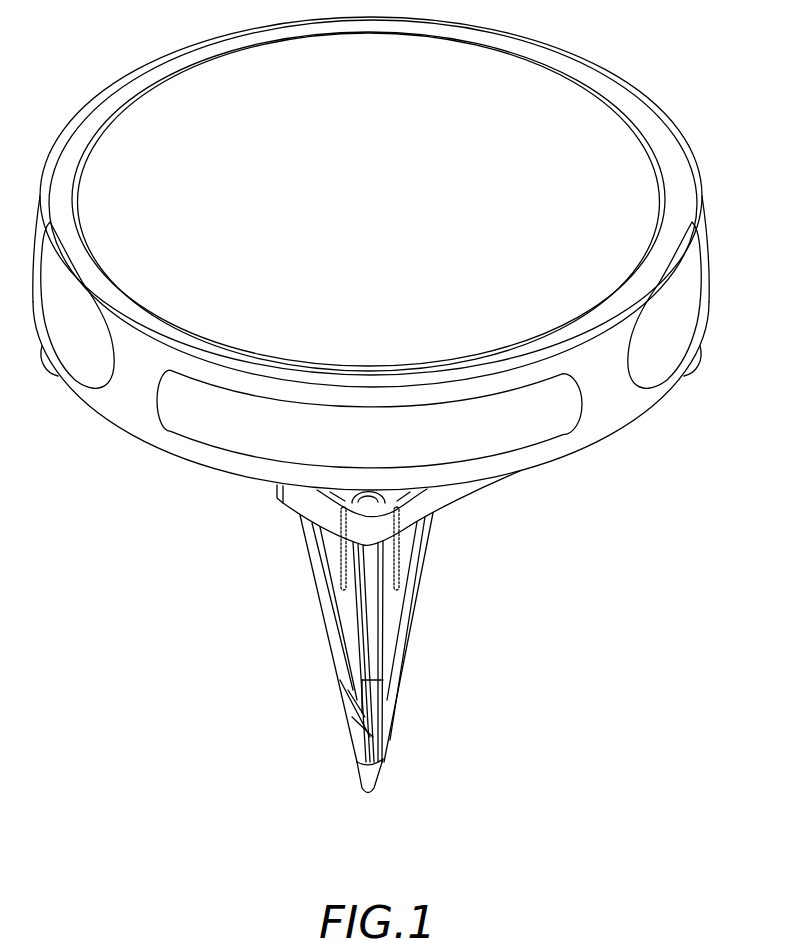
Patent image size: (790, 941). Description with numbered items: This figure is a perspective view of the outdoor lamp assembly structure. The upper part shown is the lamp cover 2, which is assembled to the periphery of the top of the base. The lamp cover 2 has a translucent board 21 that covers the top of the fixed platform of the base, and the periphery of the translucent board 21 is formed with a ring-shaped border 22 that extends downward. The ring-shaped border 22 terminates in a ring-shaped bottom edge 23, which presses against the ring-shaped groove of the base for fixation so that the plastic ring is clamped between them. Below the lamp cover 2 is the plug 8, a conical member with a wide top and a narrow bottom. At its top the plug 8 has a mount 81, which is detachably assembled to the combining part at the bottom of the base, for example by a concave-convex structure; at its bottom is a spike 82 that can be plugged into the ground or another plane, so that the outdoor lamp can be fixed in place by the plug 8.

The lamp cover 2 is at (602, 69).
The translucent board 21 is at (193, 122).
The ring-shaped border 22 is at (600, 385).
The ring-shaped bottom edge 23 is at (650, 408).
The plug 8 is at (423, 623).
The mount 81 is at (443, 503).
The spike 82 is at (368, 775).